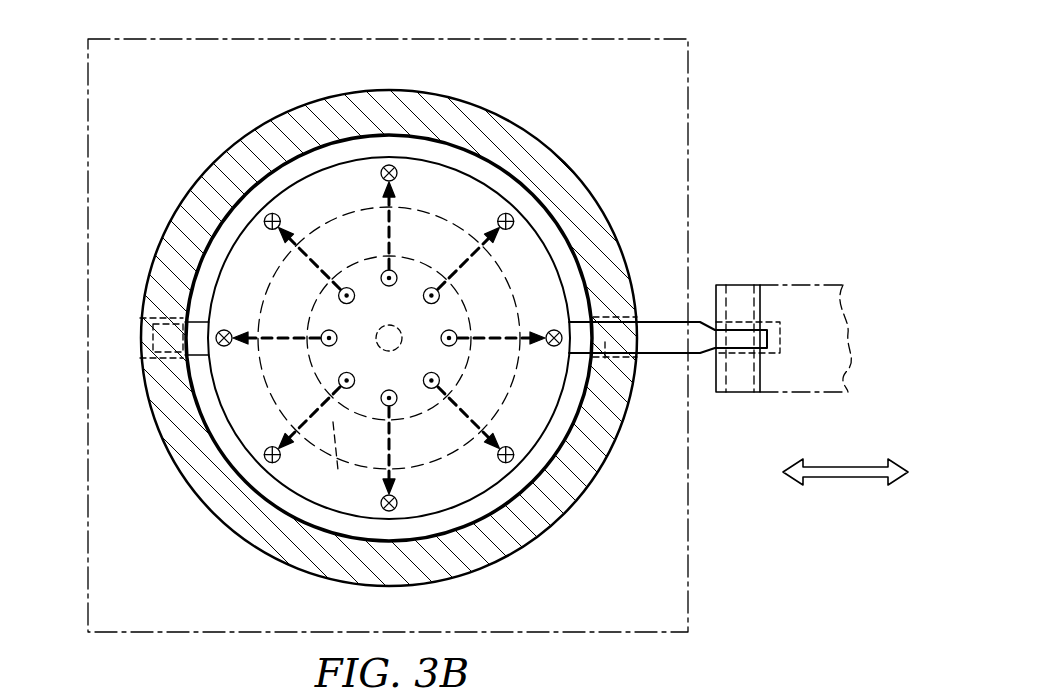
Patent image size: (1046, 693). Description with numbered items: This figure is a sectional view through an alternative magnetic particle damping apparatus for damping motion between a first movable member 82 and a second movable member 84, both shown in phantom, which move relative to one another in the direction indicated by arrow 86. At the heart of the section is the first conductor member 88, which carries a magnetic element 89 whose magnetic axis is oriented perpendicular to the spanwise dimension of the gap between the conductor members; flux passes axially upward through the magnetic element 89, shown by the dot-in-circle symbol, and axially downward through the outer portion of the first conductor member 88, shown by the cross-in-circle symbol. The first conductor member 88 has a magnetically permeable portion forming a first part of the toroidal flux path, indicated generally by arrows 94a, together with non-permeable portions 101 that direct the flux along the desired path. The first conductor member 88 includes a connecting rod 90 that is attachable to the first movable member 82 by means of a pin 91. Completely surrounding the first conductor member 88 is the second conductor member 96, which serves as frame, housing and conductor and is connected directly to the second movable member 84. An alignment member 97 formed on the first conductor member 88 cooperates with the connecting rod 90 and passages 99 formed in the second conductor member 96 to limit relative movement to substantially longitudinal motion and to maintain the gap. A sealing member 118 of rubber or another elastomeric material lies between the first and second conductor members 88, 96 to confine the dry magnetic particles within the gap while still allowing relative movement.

The first movable member 82 is at (798, 284).
The second movable member 84 is at (688, 80).
The arrow 86 is at (858, 481).
The first conductor member 88 is at (483, 180).
The magnetic element 89 is at (338, 447).
The connecting rod 90 is at (692, 320).
The pin 91 is at (740, 383).
The arrows indicating first part of magnetic flux path 94a is at (310, 267).
The second conductor member 96 is at (223, 153).
The alignment member 97 is at (137, 348).
The passages 99 is at (170, 365).
The non-permeable portions 101 is at (362, 468).
The sealing member 118 is at (220, 256).